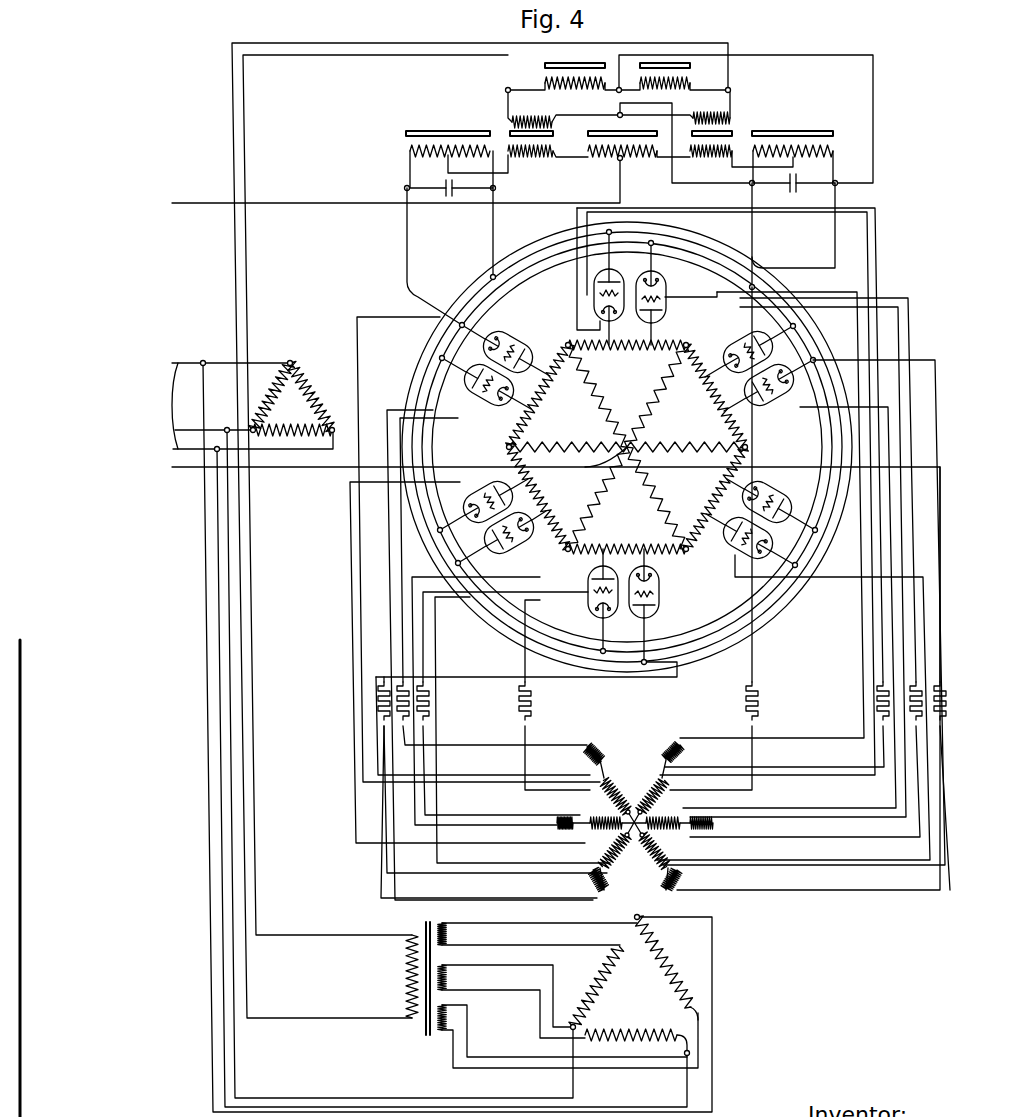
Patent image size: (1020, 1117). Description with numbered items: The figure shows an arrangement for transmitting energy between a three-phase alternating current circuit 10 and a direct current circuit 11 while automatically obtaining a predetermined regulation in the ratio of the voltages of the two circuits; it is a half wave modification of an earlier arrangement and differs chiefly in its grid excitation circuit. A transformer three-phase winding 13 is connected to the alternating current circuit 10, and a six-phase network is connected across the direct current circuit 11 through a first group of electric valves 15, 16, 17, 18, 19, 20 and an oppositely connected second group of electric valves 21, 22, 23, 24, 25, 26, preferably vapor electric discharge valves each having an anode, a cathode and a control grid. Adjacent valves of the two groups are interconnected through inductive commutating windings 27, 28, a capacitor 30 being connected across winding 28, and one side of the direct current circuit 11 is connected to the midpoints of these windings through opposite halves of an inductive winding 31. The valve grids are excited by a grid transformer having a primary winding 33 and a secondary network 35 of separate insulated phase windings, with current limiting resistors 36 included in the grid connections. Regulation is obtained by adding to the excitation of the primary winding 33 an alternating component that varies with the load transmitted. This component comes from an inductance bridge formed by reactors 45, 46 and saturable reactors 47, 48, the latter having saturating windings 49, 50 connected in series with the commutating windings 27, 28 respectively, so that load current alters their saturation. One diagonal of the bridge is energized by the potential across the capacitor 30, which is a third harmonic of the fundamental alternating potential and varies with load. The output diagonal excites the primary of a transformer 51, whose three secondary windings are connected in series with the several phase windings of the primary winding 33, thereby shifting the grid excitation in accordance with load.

The three-phase alternating current circuit 10 is at (251, 406).
The direct current circuit 11 is at (192, 483).
The three-phase winding 13 is at (292, 398).
The electric valve 15 is at (612, 275).
The electric valve 16 is at (733, 365).
The electric valve 17 is at (780, 502).
The electric valve 18 is at (633, 608).
The electric valve 19 is at (492, 540).
The electric valve 20 is at (476, 390).
The electric valve 21 is at (660, 305).
The electric valve 22 is at (768, 402).
The electric valve 23 is at (738, 546).
The electric valve 24 is at (591, 580).
The electric valve 25 is at (472, 498).
The electric valve 26 is at (516, 345).
The inductive commutating winding 27 is at (408, 150).
The inductive commutating winding 28 is at (834, 148).
The capacitor 30 is at (803, 170).
The inductive winding 31 is at (606, 160).
The primary winding of grid transformer 33 is at (636, 1006).
The secondary network of grid transformer 35 is at (635, 817).
The current limiting resistors 36 is at (378, 718).
The reactor 45 is at (547, 80).
The reactor 46 is at (692, 80).
The saturable reactor 47 is at (510, 125).
The saturable reactor 48 is at (730, 120).
The saturating winding 49 is at (527, 160).
The saturating winding 50 is at (704, 155).
The transformer 51 is at (429, 1036).